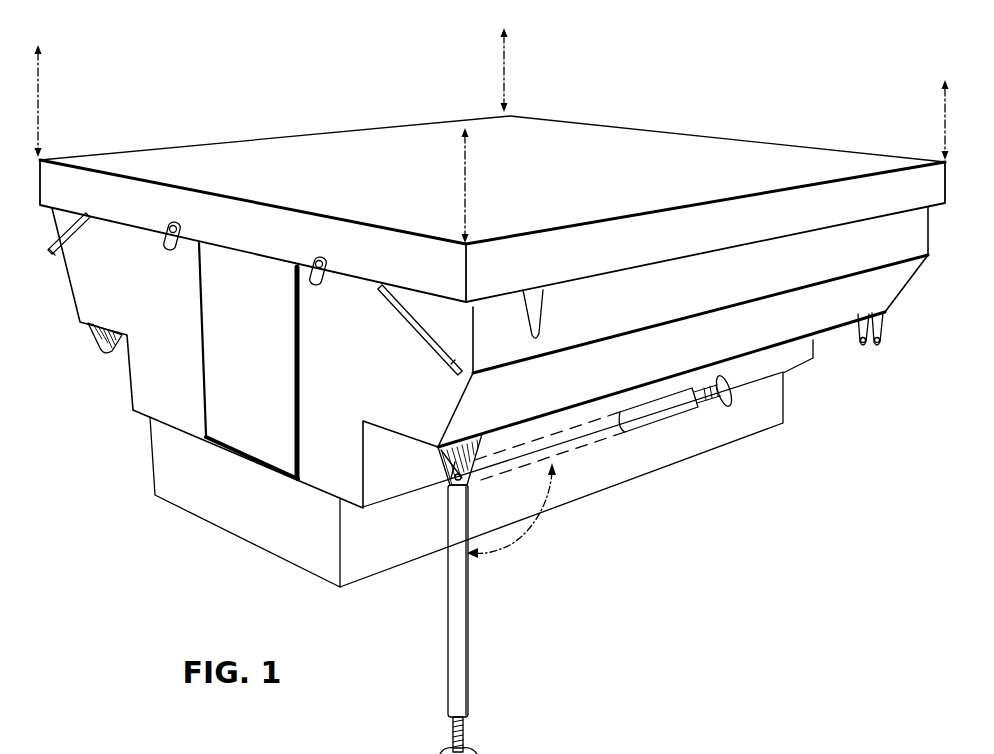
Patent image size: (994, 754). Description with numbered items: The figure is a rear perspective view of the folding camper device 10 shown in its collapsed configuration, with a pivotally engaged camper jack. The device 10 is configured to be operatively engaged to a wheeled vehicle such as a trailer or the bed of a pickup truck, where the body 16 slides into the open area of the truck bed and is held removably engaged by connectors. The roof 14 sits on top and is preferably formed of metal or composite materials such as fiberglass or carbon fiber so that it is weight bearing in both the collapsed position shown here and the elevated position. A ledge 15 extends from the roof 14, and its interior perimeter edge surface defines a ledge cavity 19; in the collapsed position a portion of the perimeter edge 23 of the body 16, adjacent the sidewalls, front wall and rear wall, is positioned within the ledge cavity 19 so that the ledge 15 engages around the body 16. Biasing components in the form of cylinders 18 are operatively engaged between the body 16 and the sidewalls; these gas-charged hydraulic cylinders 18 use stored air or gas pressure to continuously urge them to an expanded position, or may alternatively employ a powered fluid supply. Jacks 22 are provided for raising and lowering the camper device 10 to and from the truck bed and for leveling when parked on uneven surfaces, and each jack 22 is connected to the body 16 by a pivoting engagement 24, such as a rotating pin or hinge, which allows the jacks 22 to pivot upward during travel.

The folding camper device 10 is at (644, 100).
The roof 14 is at (268, 153).
The ledge 15 is at (860, 197).
The body 16 is at (163, 382).
The cylinders 18 is at (80, 228).
The ledge cavity 19 is at (543, 293).
The jacks 22 is at (633, 420).
The perimeter edge 23 is at (813, 268).
The pivoting engagement 24 is at (447, 481).